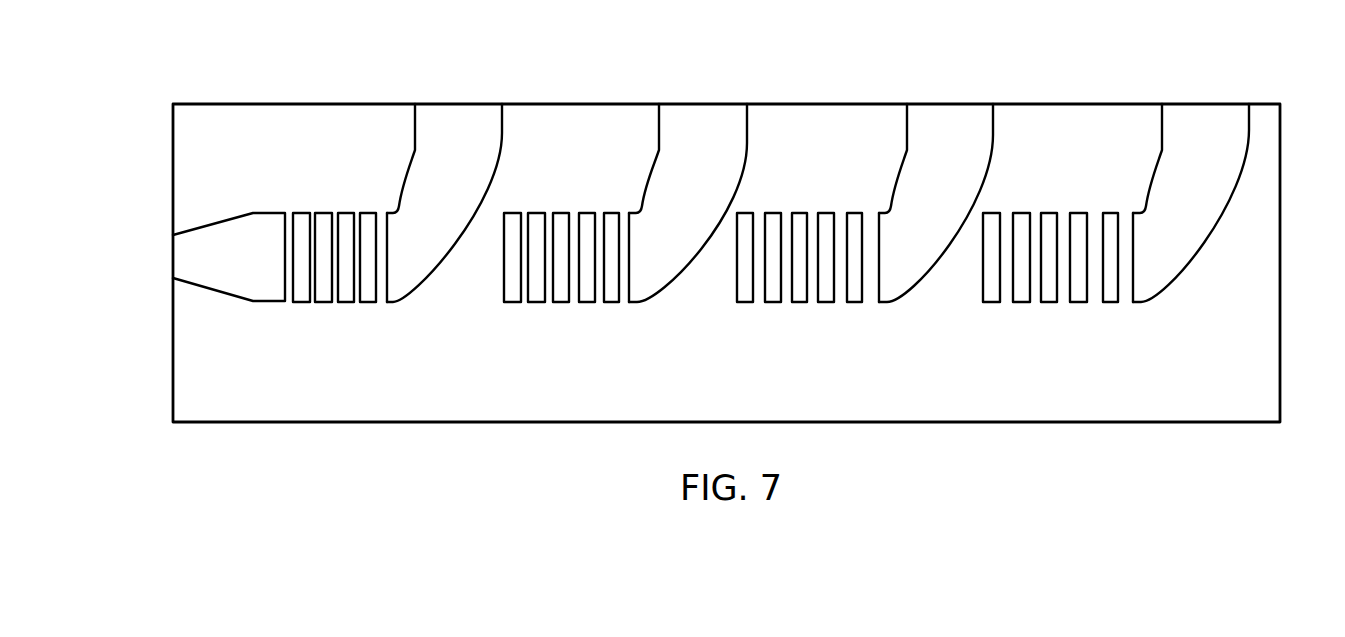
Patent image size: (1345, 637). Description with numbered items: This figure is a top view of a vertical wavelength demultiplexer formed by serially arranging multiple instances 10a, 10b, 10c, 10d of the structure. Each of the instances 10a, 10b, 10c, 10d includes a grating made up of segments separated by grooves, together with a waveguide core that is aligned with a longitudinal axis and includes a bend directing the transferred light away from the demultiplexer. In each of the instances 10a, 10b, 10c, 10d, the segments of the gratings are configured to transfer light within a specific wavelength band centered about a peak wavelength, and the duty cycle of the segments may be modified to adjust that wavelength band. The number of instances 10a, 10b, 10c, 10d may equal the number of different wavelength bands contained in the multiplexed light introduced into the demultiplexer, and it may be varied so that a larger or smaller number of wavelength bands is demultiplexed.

The instance of the structure 10a is at (308, 85).
The instance of the structure 10b is at (613, 213).
The instance of the structure 10c is at (849, 210).
The instance of the structure 10d is at (1106, 212).